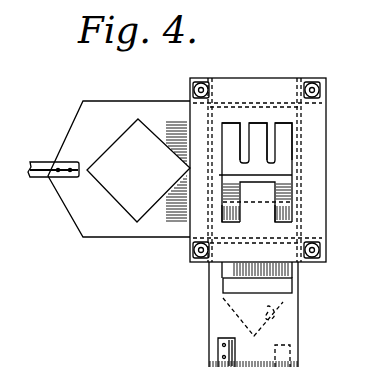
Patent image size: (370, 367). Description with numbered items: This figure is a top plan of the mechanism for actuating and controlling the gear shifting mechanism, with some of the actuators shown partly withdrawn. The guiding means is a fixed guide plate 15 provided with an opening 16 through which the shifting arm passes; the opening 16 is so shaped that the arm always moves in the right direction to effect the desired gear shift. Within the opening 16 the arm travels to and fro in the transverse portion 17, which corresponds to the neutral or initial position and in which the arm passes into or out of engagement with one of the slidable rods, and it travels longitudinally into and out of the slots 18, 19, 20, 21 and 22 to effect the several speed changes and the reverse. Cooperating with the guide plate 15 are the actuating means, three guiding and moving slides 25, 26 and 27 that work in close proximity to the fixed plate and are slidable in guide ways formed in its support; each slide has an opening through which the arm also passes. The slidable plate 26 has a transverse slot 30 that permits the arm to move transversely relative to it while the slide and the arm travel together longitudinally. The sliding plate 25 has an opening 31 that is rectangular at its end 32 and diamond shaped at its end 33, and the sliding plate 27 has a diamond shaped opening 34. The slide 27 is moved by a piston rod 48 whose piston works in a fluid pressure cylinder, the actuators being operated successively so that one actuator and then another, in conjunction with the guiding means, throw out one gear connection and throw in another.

The fixed guide plate 15 is at (312, 140).
The opening 16 is at (237, 167).
The portion of slot 17 is at (278, 174).
The slot 18 is at (285, 208).
The slot 19 is at (233, 126).
The slot 20 is at (230, 211).
The slot 21 is at (258, 130).
The slot 22 is at (285, 130).
The sliding plate 25 is at (298, 365).
The slidable plate 26 is at (218, 330).
The sliding plate 27 is at (100, 227).
The transverse slot 30 is at (278, 285).
The opening 31 is at (230, 272).
The rectangular end 32 is at (292, 194).
The diamond shaped end 33 is at (280, 312).
The diamond shaped opening 34 is at (110, 182).
The piston rod 48 is at (44, 164).